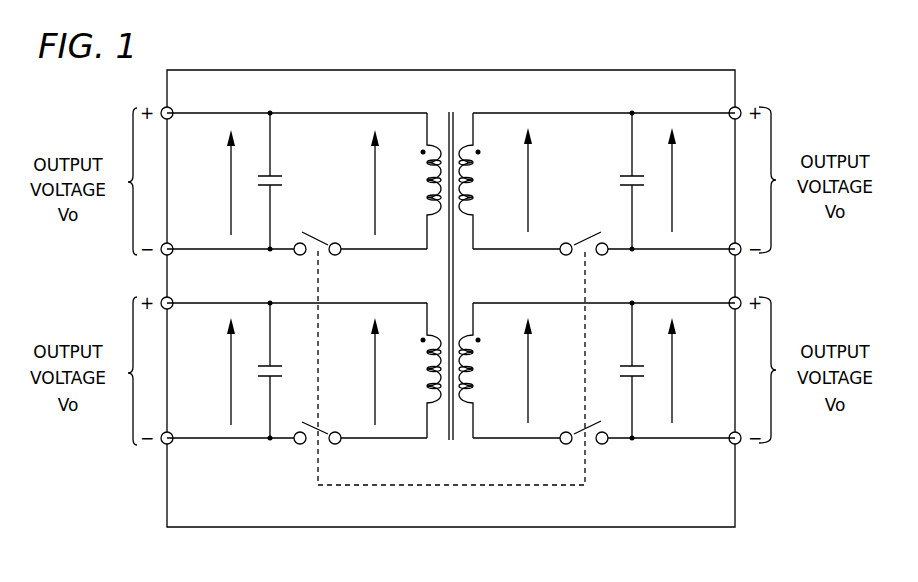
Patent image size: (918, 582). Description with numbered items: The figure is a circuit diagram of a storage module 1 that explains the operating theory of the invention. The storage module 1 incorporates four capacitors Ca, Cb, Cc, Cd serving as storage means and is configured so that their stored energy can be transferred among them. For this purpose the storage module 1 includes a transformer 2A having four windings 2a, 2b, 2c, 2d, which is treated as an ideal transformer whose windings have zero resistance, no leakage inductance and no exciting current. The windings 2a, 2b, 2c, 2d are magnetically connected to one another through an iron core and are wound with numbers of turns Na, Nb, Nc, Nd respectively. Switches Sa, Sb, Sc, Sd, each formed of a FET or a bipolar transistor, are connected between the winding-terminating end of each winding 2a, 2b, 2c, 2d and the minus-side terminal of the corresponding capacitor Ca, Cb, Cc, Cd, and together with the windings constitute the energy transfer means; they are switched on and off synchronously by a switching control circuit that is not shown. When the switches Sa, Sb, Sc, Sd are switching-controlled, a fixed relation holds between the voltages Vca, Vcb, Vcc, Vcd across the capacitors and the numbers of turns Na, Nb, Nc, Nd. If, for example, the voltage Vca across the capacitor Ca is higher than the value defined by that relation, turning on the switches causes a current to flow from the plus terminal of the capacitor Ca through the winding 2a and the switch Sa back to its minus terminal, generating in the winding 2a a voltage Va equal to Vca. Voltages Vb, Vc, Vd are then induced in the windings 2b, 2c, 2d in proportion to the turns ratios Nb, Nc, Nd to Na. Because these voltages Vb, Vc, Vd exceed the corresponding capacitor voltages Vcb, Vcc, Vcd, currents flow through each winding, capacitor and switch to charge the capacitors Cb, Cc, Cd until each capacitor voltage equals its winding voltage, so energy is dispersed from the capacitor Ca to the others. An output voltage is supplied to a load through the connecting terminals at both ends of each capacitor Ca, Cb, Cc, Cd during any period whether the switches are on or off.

The storage module 1 is at (450, 68).
The transformer 2A is at (449, 282).
The winding 2a is at (414, 200).
The winding 2b is at (414, 390).
The winding 2c is at (486, 390).
The winding 2d is at (483, 200).
The number of turns Na is at (434, 262).
The number of turns Nb is at (434, 450).
The number of turns Nc is at (487, 370).
The number of turns Nd is at (470, 262).
The capacitor Ca is at (273, 176).
The capacitor Cb is at (273, 366).
The capacitor Cc is at (630, 366).
The capacitor Cd is at (630, 176).
The switch Sa is at (319, 240).
The switch Sb is at (319, 430).
The switch Sc is at (580, 430).
The switch Sd is at (582, 240).
The voltage Va is at (363, 181).
The voltage Vb is at (365, 376).
The voltage Vc is at (540, 374).
The voltage Vd is at (540, 176).
The voltage across capacitor Vca is at (220, 188).
The voltage across capacitor Vcb is at (220, 379).
The voltage across capacitor Vcc is at (683, 379).
The voltage across capacitor Vcd is at (683, 188).